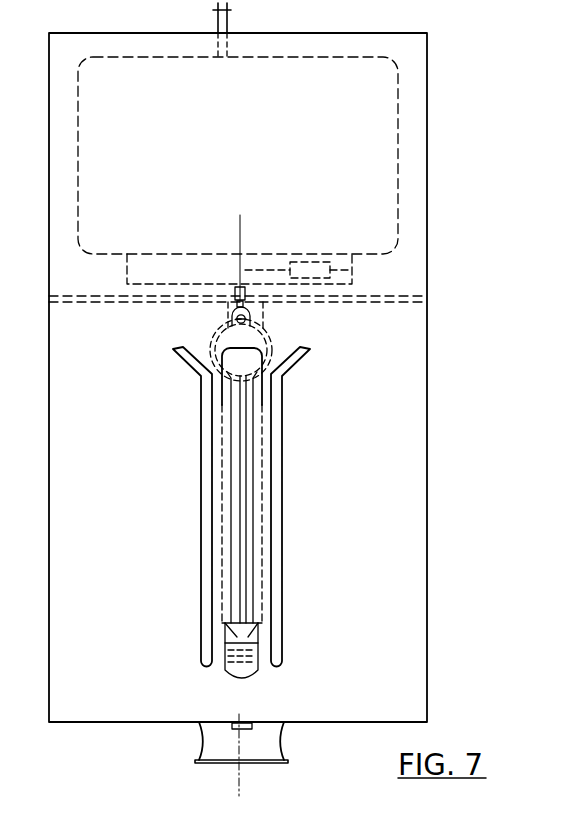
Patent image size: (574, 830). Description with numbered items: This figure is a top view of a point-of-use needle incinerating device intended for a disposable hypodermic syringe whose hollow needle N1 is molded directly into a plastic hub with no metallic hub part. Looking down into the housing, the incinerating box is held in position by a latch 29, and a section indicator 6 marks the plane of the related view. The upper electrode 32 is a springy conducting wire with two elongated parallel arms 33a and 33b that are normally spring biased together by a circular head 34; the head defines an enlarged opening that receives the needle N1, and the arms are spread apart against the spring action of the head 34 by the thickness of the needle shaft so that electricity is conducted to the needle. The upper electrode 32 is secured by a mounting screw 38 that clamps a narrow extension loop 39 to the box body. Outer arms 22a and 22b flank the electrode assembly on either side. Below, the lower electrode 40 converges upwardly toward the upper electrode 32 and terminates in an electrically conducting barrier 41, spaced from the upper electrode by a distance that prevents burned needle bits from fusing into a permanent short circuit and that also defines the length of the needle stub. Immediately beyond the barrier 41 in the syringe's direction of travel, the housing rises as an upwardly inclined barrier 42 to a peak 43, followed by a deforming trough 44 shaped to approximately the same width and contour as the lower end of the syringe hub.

The section line 6- 6 is at (230, 270).
The right outer arm of dip tube 22a is at (276, 465).
The left outer arm of dip tube 22b is at (203, 466).
The latch 29 is at (258, 729).
The upper electrode 32 is at (266, 549).
The elongated arm 33a is at (233, 582).
The elongated arm 33b is at (250, 568).
The circular head 34 is at (266, 352).
The mounting screw 38 is at (236, 320).
The extension loop 39 is at (250, 316).
The lower electrode 40 is at (247, 364).
The barrier 41 is at (245, 612).
The upwardly inclined barrier 42 is at (250, 632).
The peak 43 is at (264, 646).
The deforming trough 44 is at (258, 660).
The hollow needle N1 is at (243, 527).